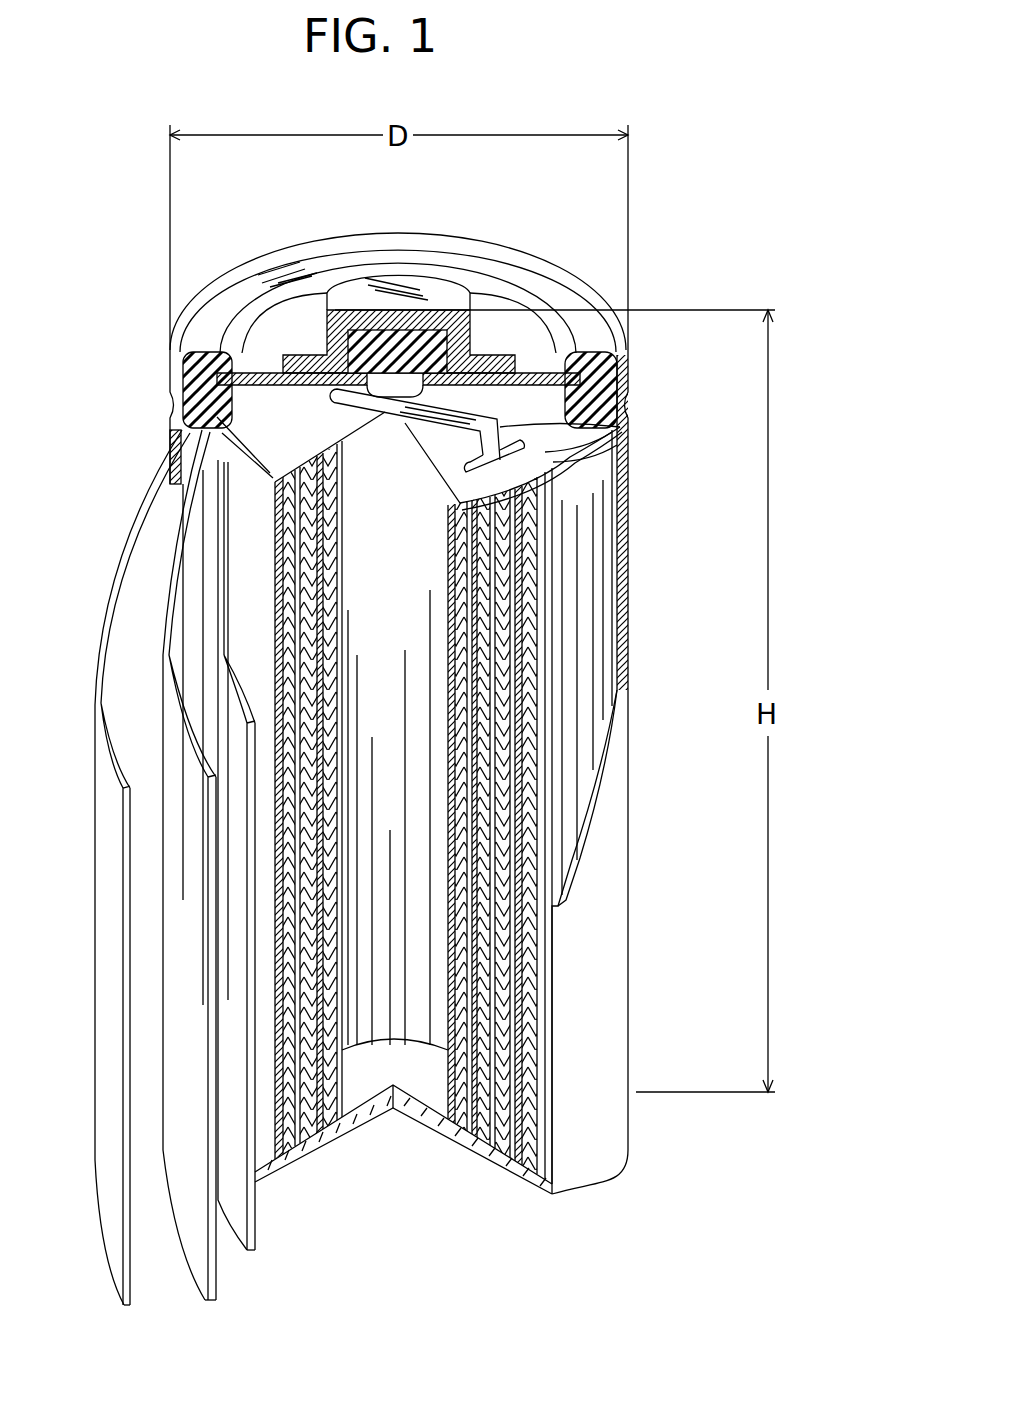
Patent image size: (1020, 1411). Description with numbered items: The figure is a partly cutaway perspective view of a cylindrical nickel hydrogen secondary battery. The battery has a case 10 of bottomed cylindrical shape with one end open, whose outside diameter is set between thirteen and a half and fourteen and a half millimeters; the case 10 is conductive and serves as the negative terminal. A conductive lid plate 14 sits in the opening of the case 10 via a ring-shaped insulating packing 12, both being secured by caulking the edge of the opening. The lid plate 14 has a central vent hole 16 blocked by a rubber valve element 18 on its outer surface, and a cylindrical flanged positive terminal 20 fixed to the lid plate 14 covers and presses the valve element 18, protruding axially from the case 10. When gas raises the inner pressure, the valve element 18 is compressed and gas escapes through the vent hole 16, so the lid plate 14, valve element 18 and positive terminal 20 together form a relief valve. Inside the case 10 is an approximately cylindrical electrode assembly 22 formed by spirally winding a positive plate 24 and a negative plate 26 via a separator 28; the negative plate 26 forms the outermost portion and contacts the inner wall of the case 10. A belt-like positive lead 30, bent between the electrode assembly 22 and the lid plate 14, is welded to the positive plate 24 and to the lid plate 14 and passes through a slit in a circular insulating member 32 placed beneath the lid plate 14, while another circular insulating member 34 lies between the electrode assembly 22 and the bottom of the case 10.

The case 10 is at (613, 757).
The insulating packing 12 is at (180, 389).
The lid plate 14 is at (262, 345).
The vent hole 16 is at (617, 381).
The valve element 18 is at (368, 342).
The positive terminal 20 is at (420, 282).
The electrode assembly 22 is at (612, 642).
The positive plate 24 is at (257, 1237).
The negative plate 26 is at (131, 1290).
The separator 28 is at (217, 1283).
The positive lead 30 is at (540, 430).
The insulating member 32 is at (540, 463).
The insulating member 34 is at (417, 1085).